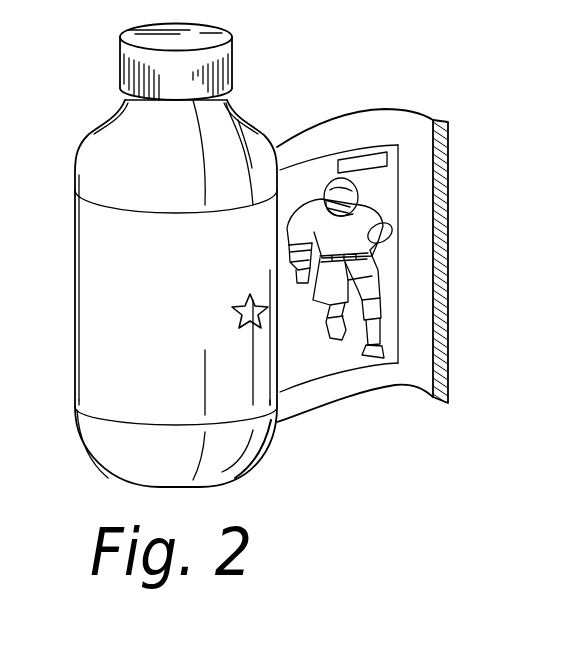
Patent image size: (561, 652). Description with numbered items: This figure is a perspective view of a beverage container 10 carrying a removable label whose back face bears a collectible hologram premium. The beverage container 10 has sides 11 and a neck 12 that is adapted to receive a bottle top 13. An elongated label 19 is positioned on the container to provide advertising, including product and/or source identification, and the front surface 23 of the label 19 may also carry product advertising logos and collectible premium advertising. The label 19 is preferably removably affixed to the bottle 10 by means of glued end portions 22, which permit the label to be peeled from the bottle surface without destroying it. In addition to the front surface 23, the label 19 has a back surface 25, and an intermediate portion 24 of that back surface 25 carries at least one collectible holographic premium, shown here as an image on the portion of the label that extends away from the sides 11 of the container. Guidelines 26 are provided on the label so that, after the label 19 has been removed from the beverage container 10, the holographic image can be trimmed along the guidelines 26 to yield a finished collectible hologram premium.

The beverage container 10 is at (102, 115).
The sides 11 is at (74, 291).
The neck 12 is at (234, 100).
The bottle top 13 is at (234, 37).
The elongated label 19 is at (88, 218).
The glued end portions 22 is at (448, 237).
The front surface 23 is at (143, 375).
The intermediate portion 24 is at (333, 165).
The back surface 25 is at (310, 400).
The guidelines 26 is at (387, 140).